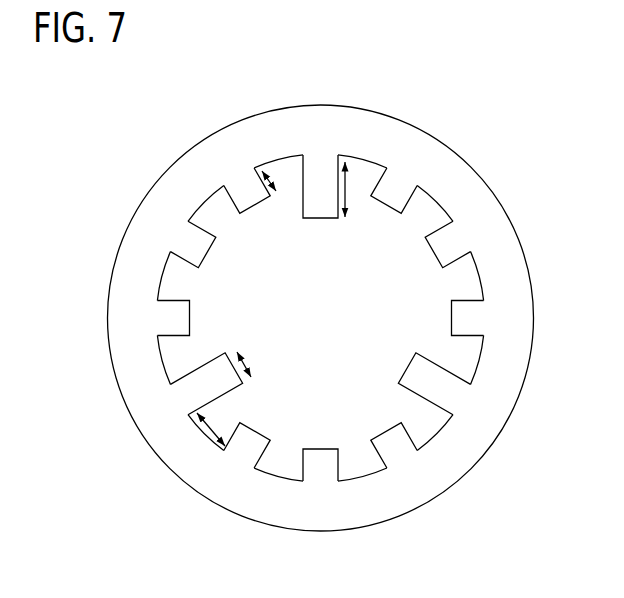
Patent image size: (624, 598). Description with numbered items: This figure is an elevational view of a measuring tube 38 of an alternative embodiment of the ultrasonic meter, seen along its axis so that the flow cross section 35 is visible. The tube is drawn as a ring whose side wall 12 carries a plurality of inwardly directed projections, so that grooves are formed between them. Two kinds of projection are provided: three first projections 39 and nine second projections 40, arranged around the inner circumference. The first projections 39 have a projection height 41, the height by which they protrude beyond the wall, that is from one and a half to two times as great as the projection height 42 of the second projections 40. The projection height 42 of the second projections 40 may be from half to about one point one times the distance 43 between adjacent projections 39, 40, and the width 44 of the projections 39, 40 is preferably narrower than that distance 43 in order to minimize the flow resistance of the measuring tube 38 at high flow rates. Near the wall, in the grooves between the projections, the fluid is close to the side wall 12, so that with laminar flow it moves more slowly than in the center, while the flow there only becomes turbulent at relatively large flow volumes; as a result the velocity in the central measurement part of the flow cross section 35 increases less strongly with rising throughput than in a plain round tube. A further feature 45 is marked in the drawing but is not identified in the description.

The side wall 12 is at (360, 138).
The measuring tube 38 is at (485, 163).
The first projections 39 is at (300, 222).
The second projections 40 is at (256, 214).
The projection height 41 is at (350, 190).
The projection height 42 is at (278, 182).
The distance 43 is at (213, 422).
The width 44 is at (246, 363).
The slot 45 is at (370, 180).
The flow cross section 35 is at (364, 359).